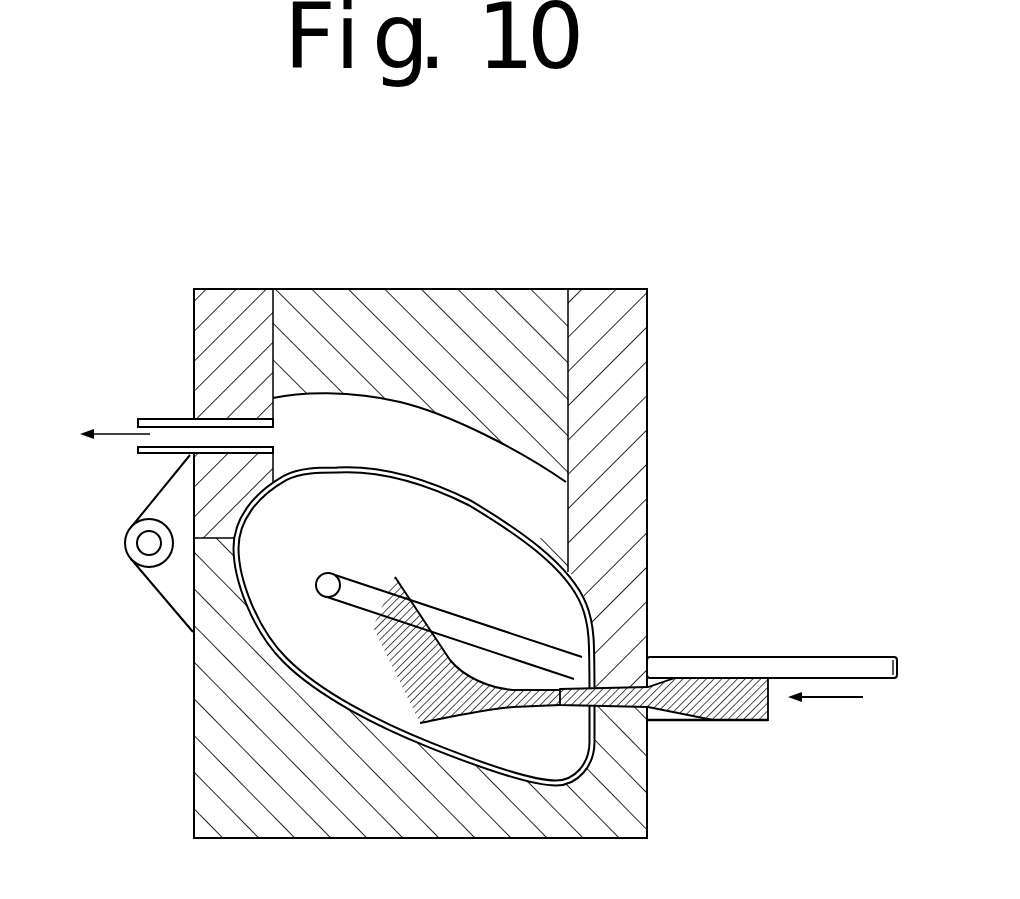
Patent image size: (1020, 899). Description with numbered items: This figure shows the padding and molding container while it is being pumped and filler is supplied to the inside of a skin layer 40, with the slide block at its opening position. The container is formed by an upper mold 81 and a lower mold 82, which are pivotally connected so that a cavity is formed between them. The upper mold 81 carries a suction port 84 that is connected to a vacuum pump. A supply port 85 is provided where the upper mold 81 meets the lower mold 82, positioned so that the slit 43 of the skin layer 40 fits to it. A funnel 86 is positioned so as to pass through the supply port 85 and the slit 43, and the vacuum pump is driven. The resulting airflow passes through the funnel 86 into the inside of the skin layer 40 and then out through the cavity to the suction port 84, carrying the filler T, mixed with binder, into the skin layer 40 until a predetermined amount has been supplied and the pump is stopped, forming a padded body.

The upper mold 81 is at (198, 773).
The lower mold 82 is at (415, 298).
The suction port 84 is at (178, 434).
The supply port 85 is at (650, 650).
The funnel 86 is at (710, 722).
The skin layer 40 is at (342, 705).
The slit 43 is at (548, 712).
The filler T is at (760, 703).